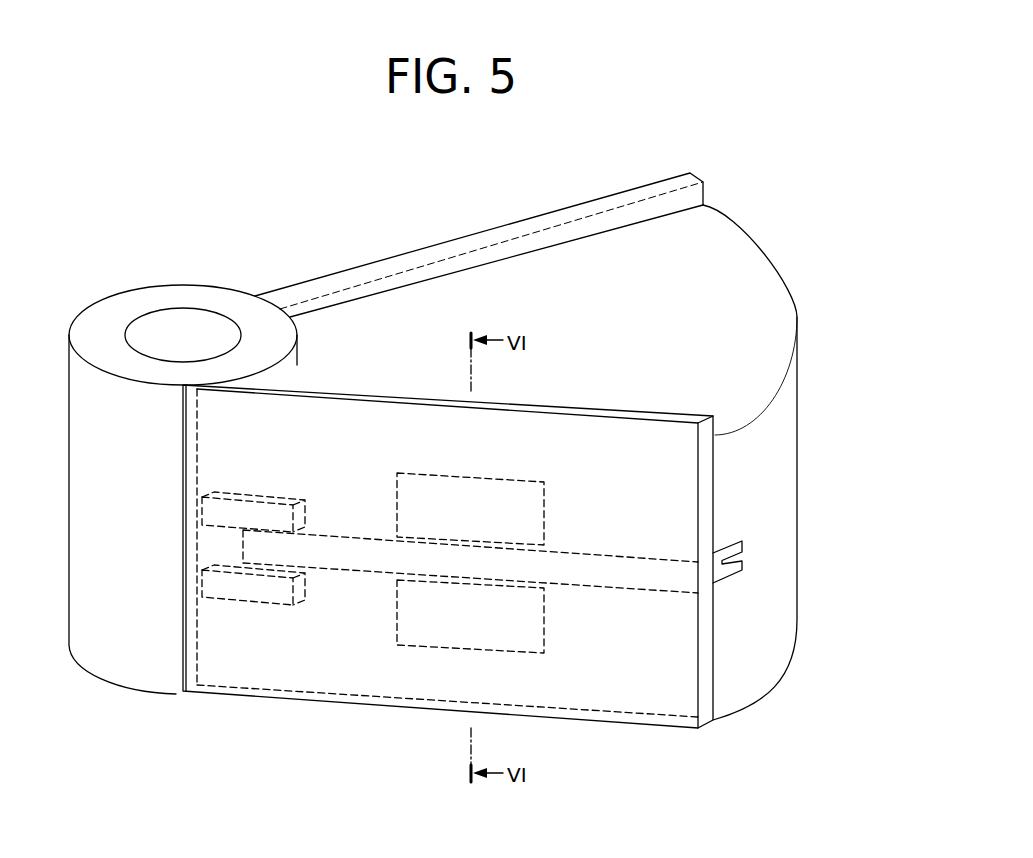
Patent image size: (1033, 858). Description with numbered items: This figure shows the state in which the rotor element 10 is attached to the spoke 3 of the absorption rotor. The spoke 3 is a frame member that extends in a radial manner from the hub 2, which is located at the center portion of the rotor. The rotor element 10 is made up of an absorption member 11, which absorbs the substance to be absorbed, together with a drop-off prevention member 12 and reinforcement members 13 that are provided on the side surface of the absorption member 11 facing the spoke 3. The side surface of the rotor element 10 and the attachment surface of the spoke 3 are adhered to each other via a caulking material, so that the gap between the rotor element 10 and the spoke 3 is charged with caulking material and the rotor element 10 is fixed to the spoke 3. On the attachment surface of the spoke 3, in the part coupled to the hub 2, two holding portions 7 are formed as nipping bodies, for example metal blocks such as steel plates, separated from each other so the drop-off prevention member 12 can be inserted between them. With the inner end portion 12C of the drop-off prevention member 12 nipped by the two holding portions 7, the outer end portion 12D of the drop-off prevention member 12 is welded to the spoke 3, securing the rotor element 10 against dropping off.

The hub 2 is at (165, 300).
The spoke 3 is at (601, 196).
The holding portion 7 is at (217, 508).
The rotor element 10 is at (840, 340).
The absorption member 11 is at (738, 247).
The drop-off prevention member 12 is at (620, 577).
The inner end portion 12C is at (323, 553).
The outer end portion 12D is at (670, 580).
The reinforcement member 13 is at (420, 492).